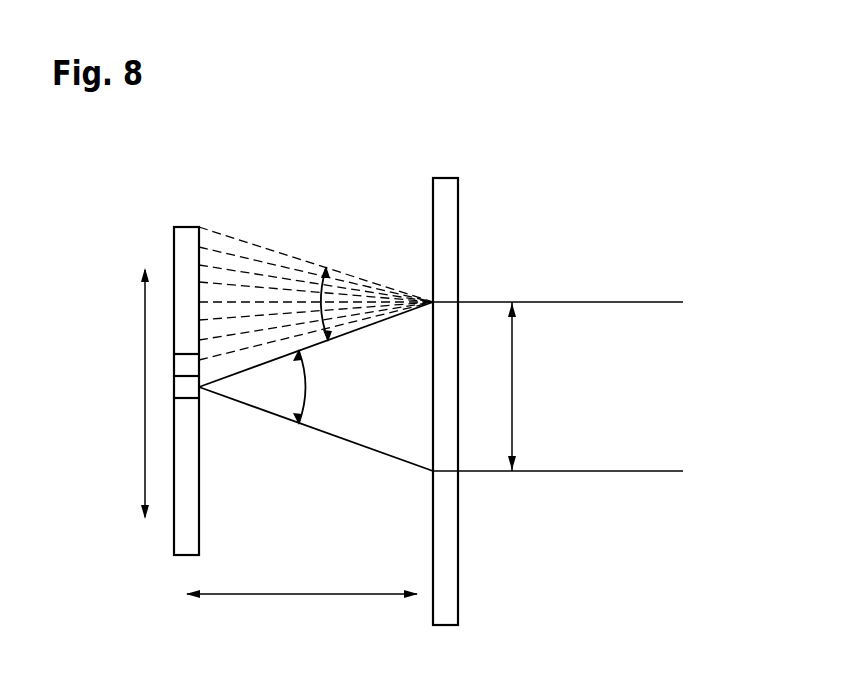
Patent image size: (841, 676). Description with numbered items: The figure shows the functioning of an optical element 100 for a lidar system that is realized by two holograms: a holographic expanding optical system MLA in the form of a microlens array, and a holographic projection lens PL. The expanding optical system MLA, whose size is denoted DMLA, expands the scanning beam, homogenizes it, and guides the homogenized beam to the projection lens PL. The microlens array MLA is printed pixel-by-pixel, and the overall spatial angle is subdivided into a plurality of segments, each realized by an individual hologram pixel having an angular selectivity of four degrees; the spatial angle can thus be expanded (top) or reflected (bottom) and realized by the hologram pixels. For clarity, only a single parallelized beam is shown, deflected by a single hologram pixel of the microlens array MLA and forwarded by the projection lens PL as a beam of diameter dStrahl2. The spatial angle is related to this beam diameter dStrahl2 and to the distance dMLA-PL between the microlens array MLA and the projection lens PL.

The optical element 100 is at (566, 121).
The expanding optical system (microlens array) MLA is at (185, 232).
The projection lens PL is at (445, 192).
The size of the microlens array DMLA is at (113, 393).
The diameter of the beam at the projection lens dStrahl2 is at (560, 386).
The distance between the microlens array and the projection lens dMLA-PL is at (302, 613).